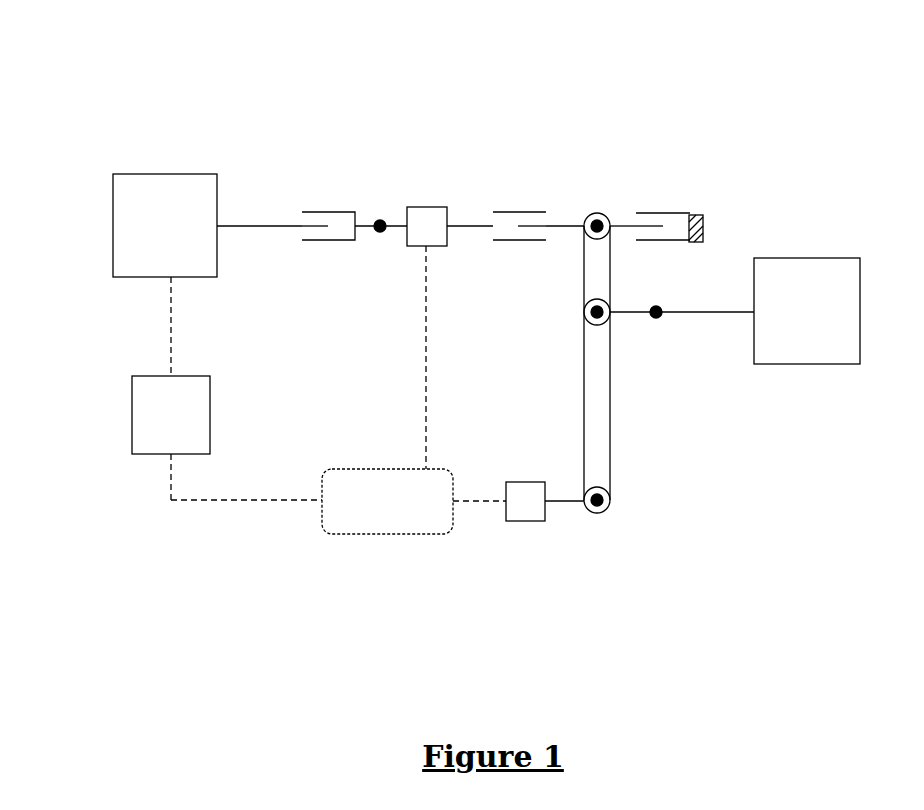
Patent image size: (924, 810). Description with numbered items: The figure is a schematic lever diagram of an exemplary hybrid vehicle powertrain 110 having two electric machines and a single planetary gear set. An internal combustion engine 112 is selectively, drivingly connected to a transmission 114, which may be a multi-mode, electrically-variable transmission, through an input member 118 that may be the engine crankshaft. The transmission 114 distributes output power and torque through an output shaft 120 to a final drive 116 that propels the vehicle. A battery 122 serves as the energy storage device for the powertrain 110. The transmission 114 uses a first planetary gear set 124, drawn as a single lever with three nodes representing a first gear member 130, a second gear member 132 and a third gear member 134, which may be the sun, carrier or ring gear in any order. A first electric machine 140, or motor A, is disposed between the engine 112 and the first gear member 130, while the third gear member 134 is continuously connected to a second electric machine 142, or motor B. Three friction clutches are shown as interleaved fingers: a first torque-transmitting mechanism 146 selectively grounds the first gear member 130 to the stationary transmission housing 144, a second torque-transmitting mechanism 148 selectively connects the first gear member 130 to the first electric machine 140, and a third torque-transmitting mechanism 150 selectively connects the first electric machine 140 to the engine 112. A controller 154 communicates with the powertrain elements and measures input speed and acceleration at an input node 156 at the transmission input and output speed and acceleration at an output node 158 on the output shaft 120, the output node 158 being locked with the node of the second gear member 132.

The powertrain 110 is at (213, 553).
The internal combustion engine 112 is at (143, 173).
The transmission 114 is at (429, 96).
The final drive 116 is at (825, 365).
The input member 118 is at (275, 228).
The output shaft 120 is at (708, 313).
The battery 122 is at (360, 468).
The first planetary gear set 124 is at (597, 153).
The first gear member 130 is at (596, 213).
The second gear member 132 is at (583, 313).
The third gear member 134 is at (600, 513).
The first electric machine 140 is at (432, 247).
The second electric machine 142 is at (525, 481).
The transmission housing 144 is at (695, 214).
The first torque-transmitting mechanism 146 is at (663, 212).
The second torque-transmitting mechanism 148 is at (518, 211).
The third torque-transmitting mechanism 150 is at (328, 211).
The controller 154 is at (157, 455).
The input node 156 is at (380, 233).
The output node 158 is at (655, 320).